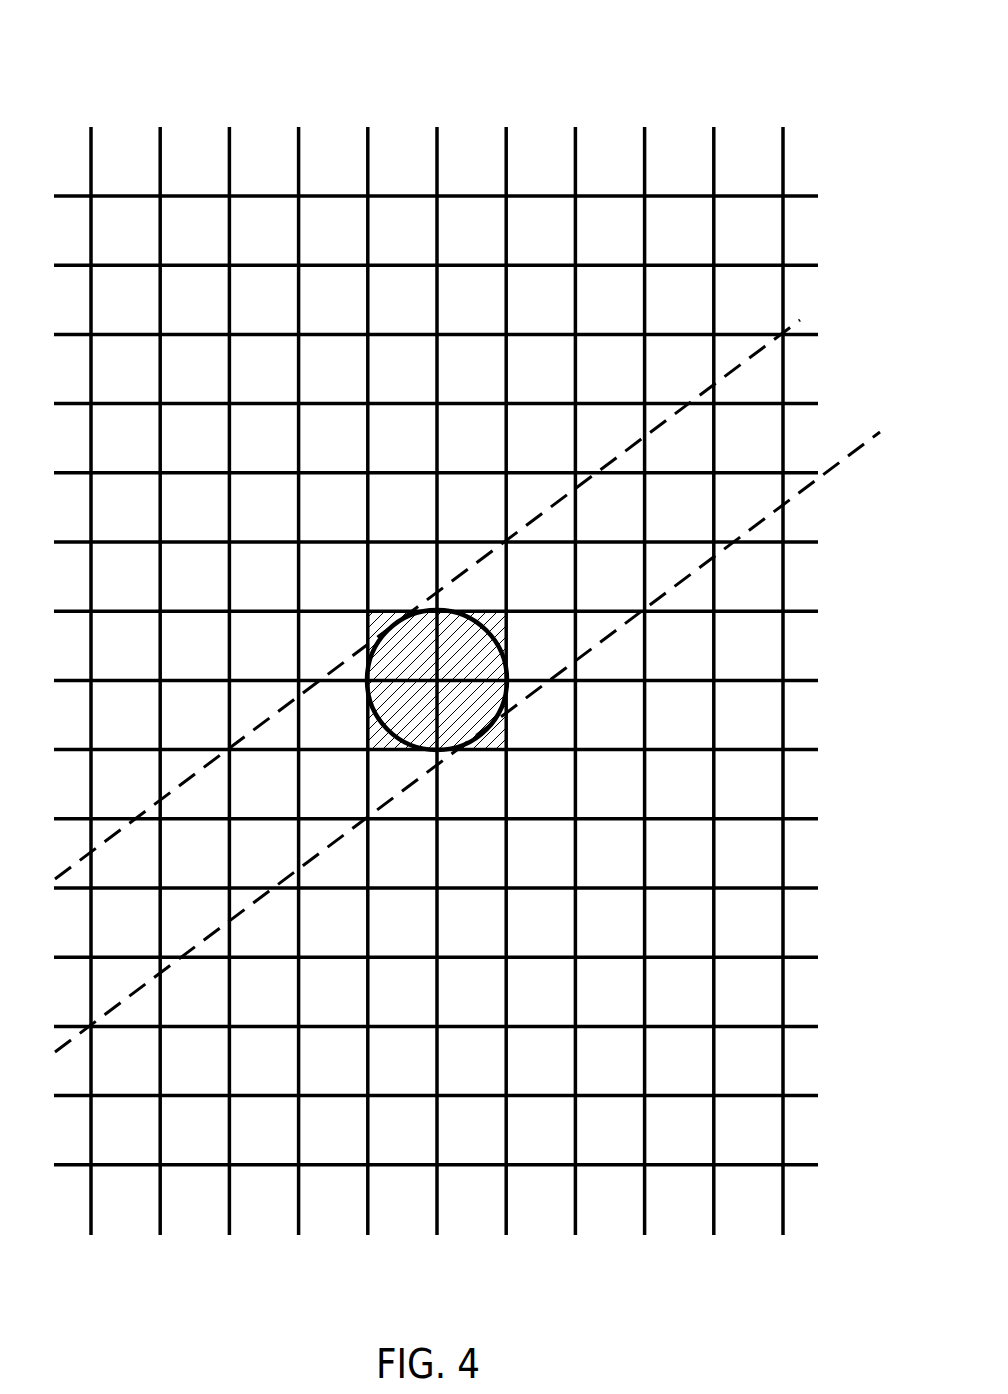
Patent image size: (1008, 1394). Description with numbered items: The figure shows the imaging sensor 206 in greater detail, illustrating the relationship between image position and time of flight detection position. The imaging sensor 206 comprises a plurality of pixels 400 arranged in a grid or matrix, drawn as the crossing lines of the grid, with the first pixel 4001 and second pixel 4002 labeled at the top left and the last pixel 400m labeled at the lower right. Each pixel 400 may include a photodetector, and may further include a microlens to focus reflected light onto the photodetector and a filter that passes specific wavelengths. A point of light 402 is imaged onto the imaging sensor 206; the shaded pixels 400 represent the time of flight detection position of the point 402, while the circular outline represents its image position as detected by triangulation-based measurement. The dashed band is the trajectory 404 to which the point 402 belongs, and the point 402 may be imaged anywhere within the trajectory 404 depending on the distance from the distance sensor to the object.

The imaging sensor 206 is at (97, 32).
The pixel 400 is at (483, 655).
The first pixel 4001 is at (125, 160).
The second pixel 4002 is at (193, 160).
The m-th pixel 400m is at (747, 1130).
The point of light 402 is at (462, 657).
The trajectory 404 is at (885, 428).